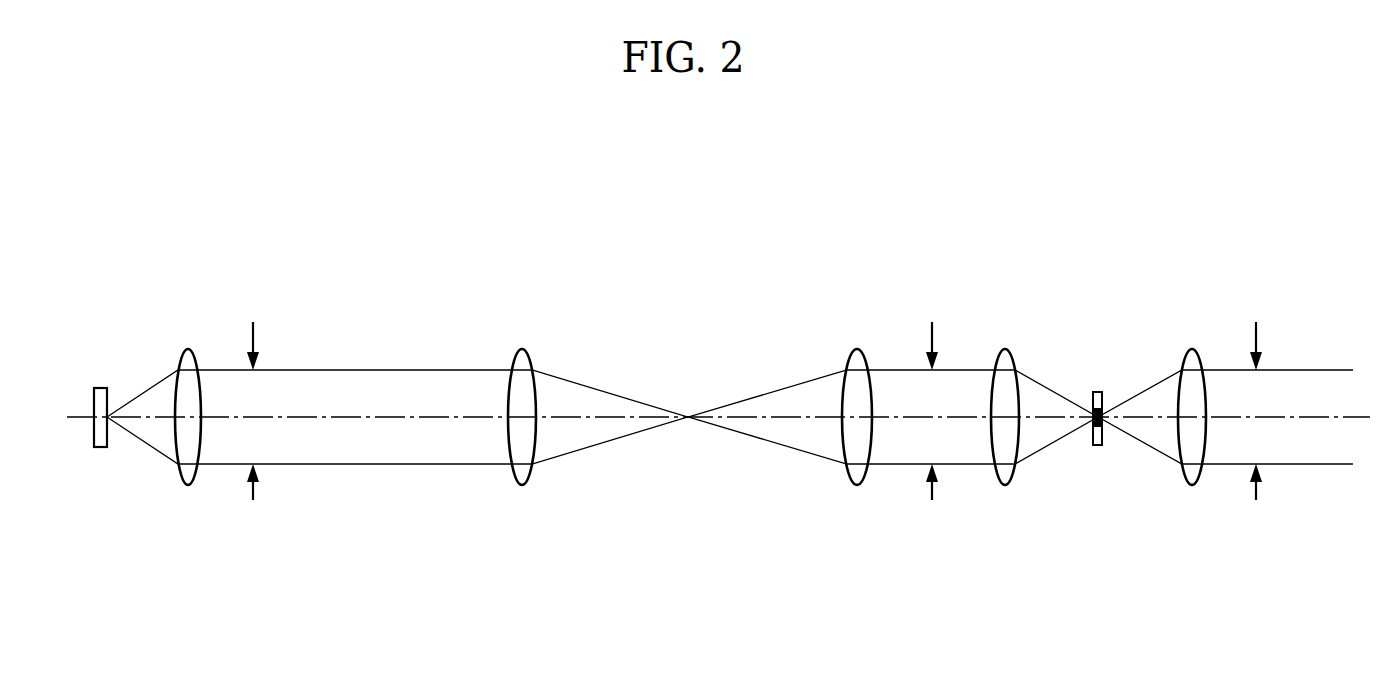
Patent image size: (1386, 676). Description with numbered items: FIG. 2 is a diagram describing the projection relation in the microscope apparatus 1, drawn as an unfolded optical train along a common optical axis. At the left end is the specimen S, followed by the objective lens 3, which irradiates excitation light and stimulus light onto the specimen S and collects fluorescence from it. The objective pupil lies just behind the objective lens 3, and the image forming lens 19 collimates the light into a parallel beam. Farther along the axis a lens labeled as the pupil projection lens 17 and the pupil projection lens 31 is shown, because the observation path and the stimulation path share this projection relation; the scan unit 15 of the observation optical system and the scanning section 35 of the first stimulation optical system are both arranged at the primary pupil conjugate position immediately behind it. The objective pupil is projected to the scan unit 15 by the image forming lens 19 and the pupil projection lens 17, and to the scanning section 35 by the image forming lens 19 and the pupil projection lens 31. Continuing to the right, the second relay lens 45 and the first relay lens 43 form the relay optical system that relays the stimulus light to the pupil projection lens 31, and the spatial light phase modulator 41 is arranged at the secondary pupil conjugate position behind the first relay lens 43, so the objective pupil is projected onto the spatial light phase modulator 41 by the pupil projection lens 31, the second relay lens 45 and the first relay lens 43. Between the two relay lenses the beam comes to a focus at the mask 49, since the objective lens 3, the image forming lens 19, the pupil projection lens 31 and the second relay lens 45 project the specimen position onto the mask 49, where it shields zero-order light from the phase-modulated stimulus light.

The microscope apparatus 1 is at (244, 178).
The specimen S is at (100, 387).
The objective lens 3 is at (183, 349).
The image forming lens 19 is at (520, 349).
The pupil projection lens 17 is at (853, 349).
The pupil projection lens 31 is at (857, 372).
The scan unit 15 is at (930, 396).
The scanning section 35 is at (930, 396).
The second relay lens 45 is at (1001, 349).
The mask 49 is at (1097, 391).
The first relay lens 43 is at (1188, 349).
The spatial light phase modulator 41 is at (1254, 394).